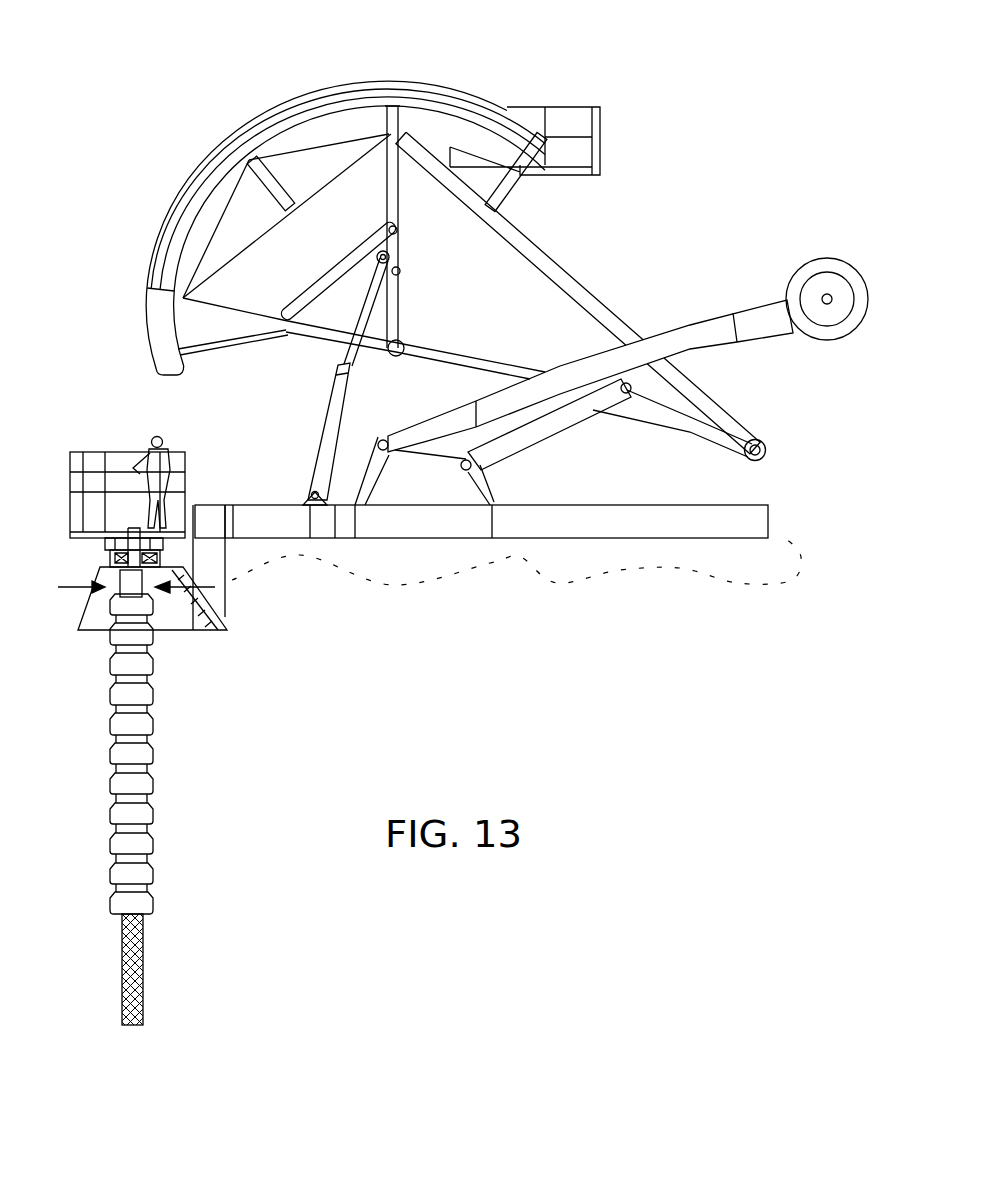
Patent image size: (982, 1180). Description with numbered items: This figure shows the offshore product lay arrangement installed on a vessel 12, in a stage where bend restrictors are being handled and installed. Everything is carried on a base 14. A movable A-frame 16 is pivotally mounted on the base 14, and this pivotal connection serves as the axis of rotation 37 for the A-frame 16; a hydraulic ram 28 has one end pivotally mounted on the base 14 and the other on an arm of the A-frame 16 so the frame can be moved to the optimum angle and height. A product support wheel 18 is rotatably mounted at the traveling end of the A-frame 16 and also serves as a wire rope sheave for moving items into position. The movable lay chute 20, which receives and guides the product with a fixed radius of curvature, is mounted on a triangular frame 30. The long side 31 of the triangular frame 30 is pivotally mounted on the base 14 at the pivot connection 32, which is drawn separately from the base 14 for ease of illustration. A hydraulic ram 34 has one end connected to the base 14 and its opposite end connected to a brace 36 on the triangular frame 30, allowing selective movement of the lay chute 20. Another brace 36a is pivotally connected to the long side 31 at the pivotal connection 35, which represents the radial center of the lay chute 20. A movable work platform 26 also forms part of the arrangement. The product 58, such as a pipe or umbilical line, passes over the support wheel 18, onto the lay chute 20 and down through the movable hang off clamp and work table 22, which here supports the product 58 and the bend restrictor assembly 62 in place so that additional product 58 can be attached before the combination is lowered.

The vessel 12 is at (414, 574).
The base 14 is at (625, 506).
The A-frame 16 is at (687, 325).
The product support wheel 18 is at (850, 260).
The movable lay chute 20 is at (355, 84).
The movable hang off clamp and work table 22 is at (62, 555).
The movable work platform 26 is at (610, 178).
The hydraulic ram 28 is at (550, 437).
The triangular frame 30 is at (546, 250).
The long side 31 is at (433, 350).
The pivot connection 32 is at (766, 452).
The hydraulic ram 34 is at (335, 395).
The pivotal connection 35 is at (400, 360).
The brace 36 is at (347, 257).
The brace 36a is at (388, 187).
The axis of rotation 37 is at (389, 448).
The product 58 is at (143, 977).
The bend restrictor assembly 62 is at (180, 738).